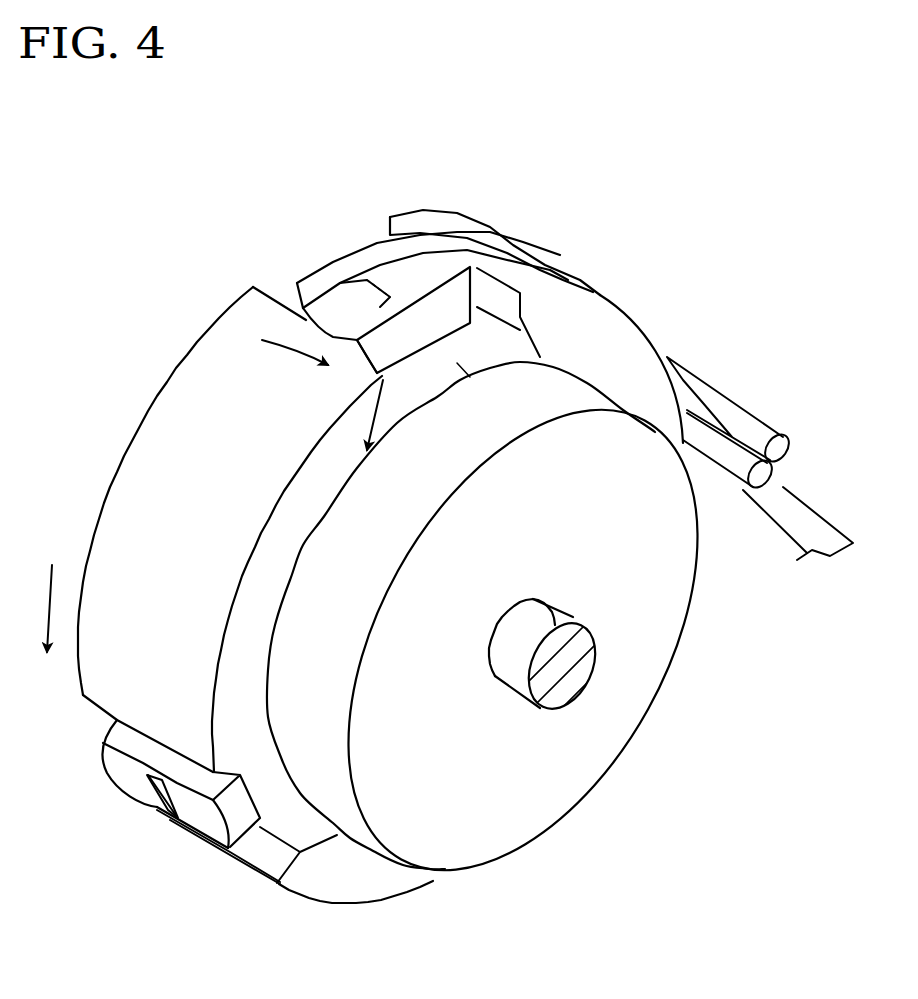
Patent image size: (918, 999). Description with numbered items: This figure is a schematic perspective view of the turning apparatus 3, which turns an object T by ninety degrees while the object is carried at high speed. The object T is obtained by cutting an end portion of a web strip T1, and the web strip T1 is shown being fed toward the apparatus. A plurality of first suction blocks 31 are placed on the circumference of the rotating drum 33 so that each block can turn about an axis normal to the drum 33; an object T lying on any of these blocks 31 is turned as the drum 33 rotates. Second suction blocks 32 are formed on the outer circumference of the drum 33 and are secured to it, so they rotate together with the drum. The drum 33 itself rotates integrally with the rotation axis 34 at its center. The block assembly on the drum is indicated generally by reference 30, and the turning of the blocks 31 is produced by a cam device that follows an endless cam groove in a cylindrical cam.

The turning apparatus 3 is at (410, 168).
The tape guide assembly 30 is at (113, 303).
The first suction blocks 31 is at (300, 296).
The second suction blocks 32 is at (196, 350).
The rotating drum 33 is at (457, 367).
The rotation axis 34 is at (512, 692).
The object T is at (83, 813).
The web strip T1 is at (525, 238).